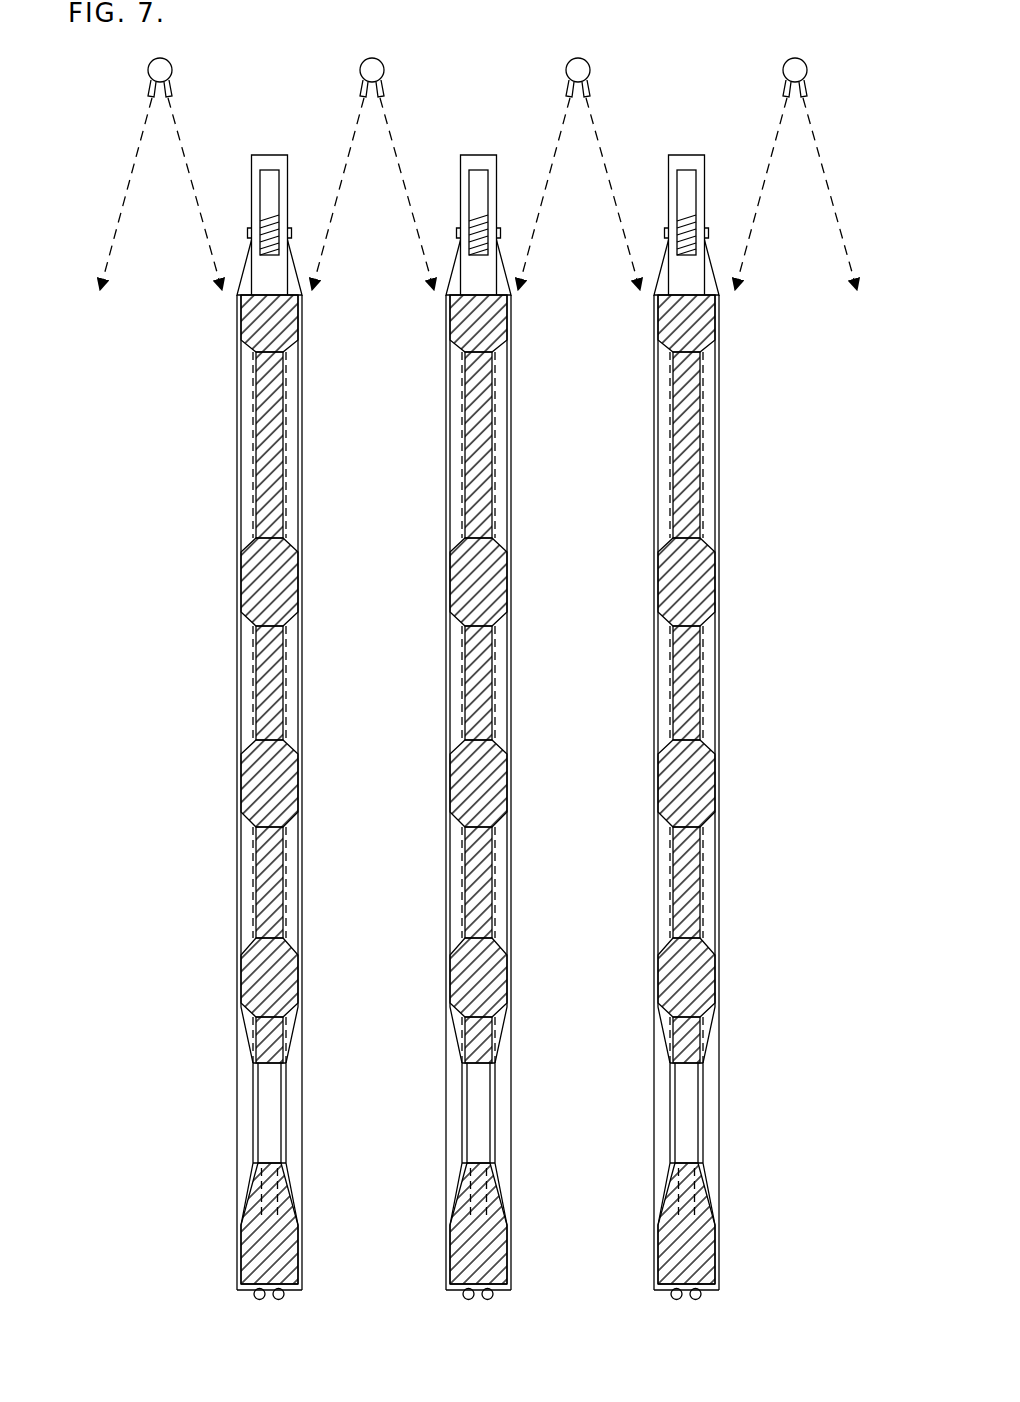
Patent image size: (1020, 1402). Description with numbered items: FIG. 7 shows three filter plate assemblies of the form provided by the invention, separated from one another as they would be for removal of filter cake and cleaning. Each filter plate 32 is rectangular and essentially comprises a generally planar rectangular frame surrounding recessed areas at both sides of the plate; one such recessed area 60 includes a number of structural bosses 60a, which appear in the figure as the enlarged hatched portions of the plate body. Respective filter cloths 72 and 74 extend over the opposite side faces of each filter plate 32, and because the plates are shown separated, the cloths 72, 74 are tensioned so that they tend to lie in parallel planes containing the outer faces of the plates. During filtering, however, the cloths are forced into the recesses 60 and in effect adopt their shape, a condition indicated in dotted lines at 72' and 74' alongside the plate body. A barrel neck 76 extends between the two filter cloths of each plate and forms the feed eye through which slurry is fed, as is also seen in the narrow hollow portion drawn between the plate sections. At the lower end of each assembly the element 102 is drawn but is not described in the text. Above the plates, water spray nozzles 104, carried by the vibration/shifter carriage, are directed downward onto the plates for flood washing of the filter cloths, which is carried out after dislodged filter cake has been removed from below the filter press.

The filter plate 32 is at (434, 920).
The recessed area 60 is at (285, 410).
The structural bosses 60a is at (462, 578).
The filter cloth 72 is at (416, 792).
The filter cloth 74 is at (540, 792).
The filter cloth in filtering position 72' is at (421, 783).
The filter cloth in filtering position 74' is at (541, 783).
The barrel neck 76 is at (300, 1100).
The bottom loops 102 is at (462, 1303).
The water spray nozzles 104 is at (360, 72).